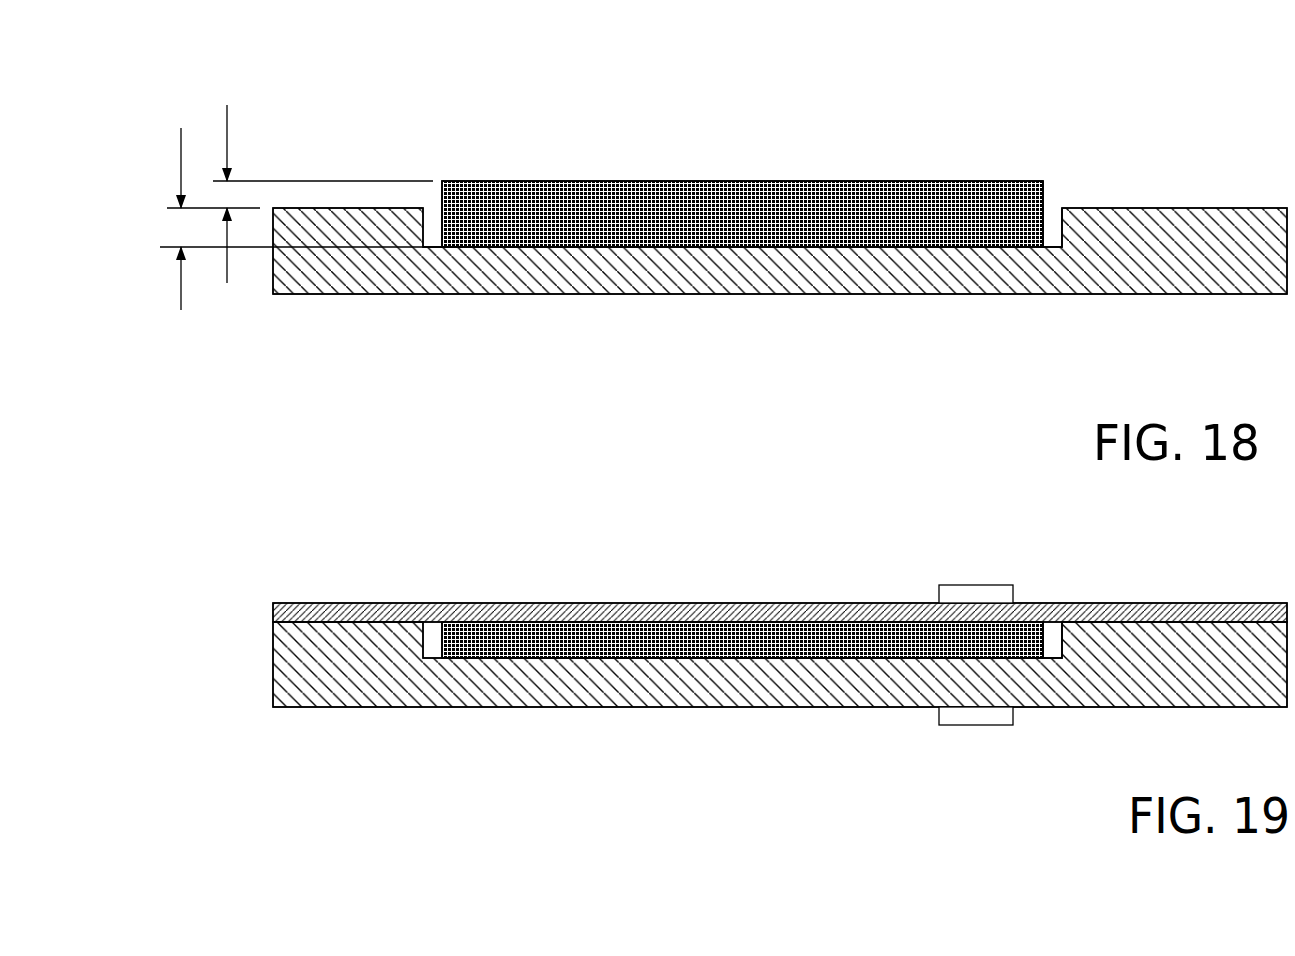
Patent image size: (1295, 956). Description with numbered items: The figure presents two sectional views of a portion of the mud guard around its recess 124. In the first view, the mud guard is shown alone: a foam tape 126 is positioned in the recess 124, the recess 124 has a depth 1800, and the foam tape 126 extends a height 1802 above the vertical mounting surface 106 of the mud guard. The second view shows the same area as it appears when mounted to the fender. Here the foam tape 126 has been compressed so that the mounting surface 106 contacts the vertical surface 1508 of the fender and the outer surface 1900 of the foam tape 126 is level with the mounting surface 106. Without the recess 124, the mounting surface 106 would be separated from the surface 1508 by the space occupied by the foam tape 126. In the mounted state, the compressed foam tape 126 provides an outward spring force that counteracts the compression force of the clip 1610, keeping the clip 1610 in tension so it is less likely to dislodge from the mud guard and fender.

In FIG. 18, the vertical mounting surface 106 is at (1102, 210).
In FIG. 19, the vertical mounting surface 106 is at (303, 622).
In FIG. 18, the recess 124 is at (1053, 222).
In FIG. 19, the recess 124 is at (1052, 650).
In FIG. 18, the foam tape 126 is at (907, 200).
In FIG. 19, the foam tape 126 is at (568, 640).
In FIG. 19, the vertical surface 1508 is at (432, 620).
In FIG. 19, the clip 1610 is at (980, 585).
In FIG. 18, the depth 1800 is at (181, 310).
In FIG. 18, the height 1802 is at (227, 105).
In FIG. 18, the outer surface 1900 is at (693, 181).
In FIG. 19, the outer surface 1900 is at (740, 622).